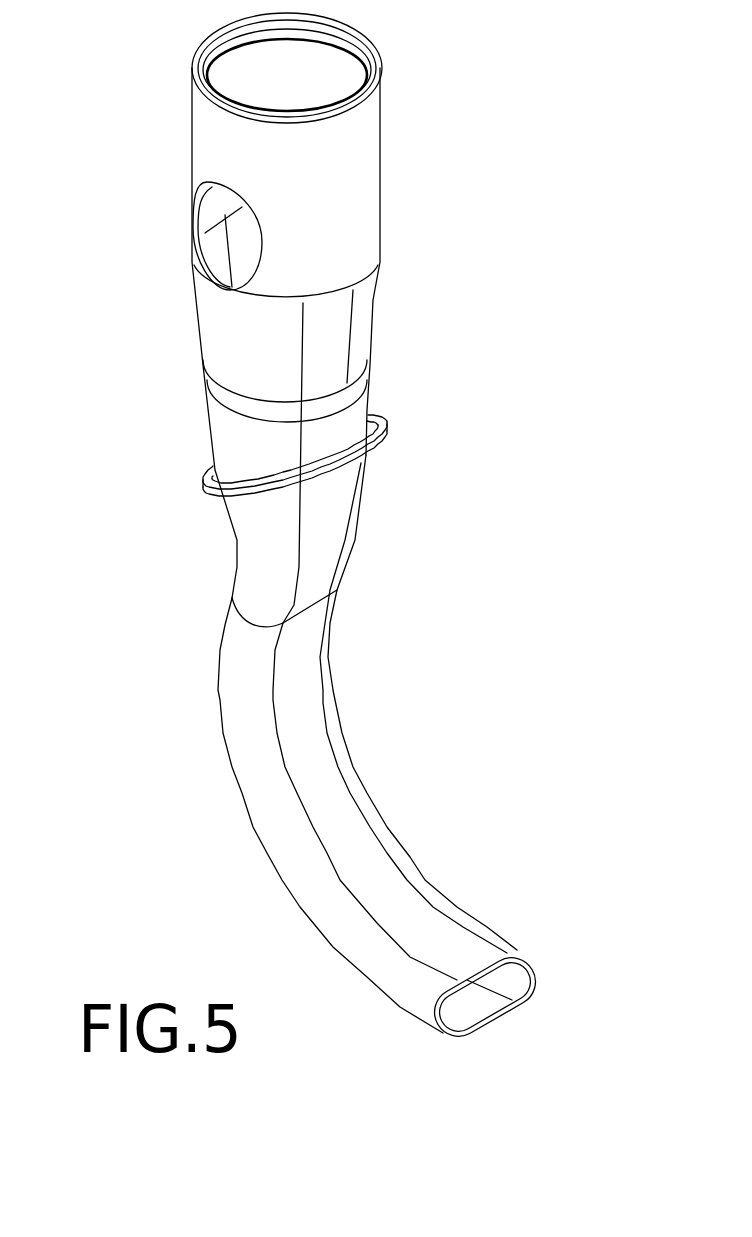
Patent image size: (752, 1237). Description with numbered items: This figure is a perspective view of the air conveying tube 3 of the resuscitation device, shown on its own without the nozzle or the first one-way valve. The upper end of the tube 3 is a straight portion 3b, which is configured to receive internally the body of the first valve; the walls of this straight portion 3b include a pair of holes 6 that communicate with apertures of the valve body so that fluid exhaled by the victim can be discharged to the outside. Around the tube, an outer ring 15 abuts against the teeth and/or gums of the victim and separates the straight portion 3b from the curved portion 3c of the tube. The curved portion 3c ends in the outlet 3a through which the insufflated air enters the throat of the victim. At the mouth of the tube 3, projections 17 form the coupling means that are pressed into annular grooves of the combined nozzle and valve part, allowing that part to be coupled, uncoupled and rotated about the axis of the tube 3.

The air conveying tube 3 is at (432, 248).
The outlet 3a is at (517, 950).
The straight portion 3b is at (347, 335).
The curved portion 3c is at (318, 703).
The holes 6 is at (202, 201).
The outer ring 15 is at (205, 485).
The projections 17 is at (338, 47).